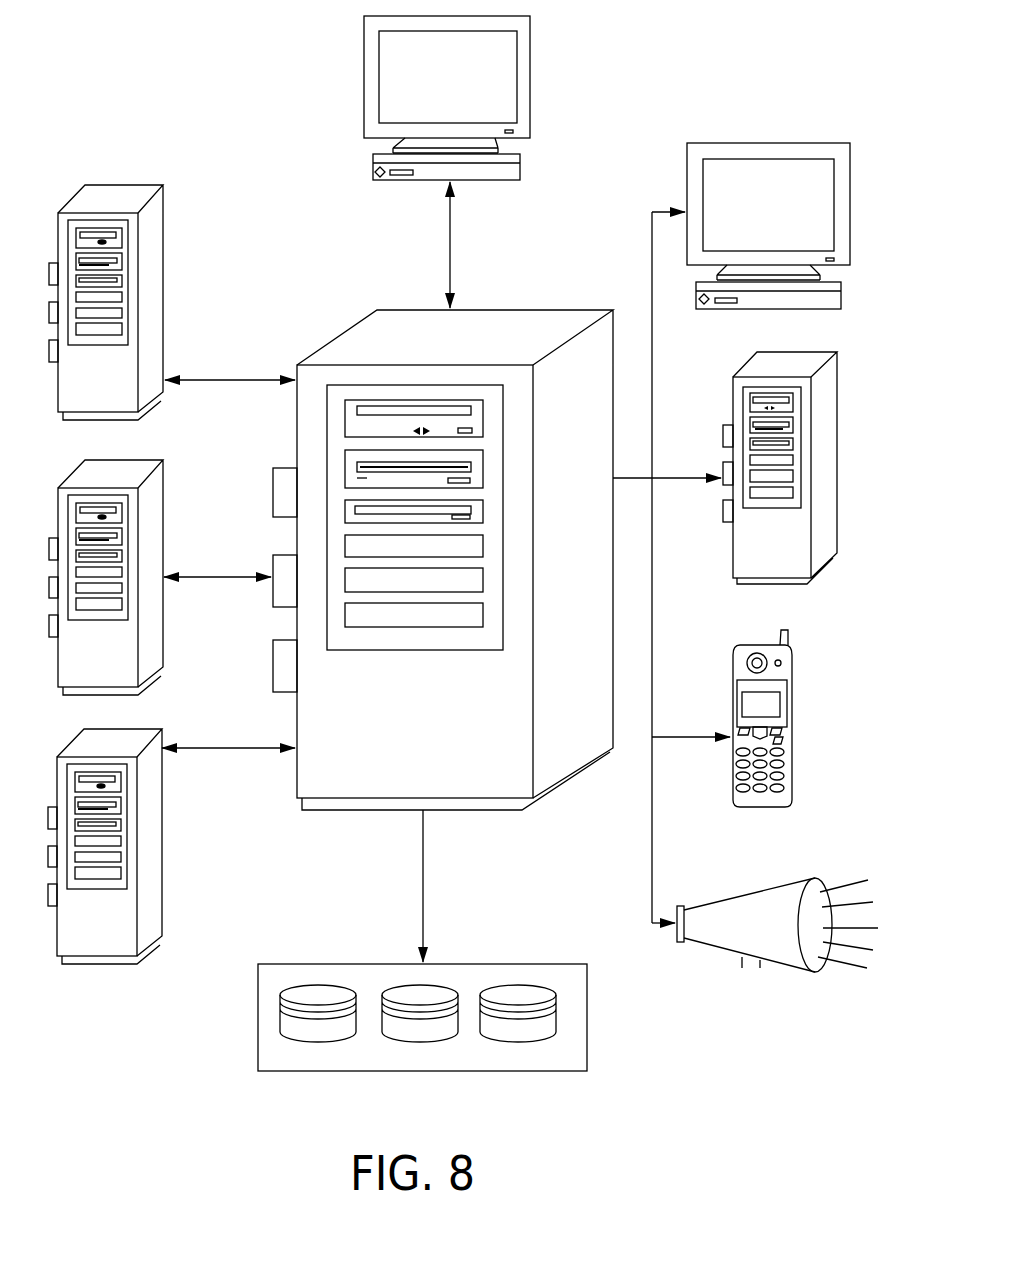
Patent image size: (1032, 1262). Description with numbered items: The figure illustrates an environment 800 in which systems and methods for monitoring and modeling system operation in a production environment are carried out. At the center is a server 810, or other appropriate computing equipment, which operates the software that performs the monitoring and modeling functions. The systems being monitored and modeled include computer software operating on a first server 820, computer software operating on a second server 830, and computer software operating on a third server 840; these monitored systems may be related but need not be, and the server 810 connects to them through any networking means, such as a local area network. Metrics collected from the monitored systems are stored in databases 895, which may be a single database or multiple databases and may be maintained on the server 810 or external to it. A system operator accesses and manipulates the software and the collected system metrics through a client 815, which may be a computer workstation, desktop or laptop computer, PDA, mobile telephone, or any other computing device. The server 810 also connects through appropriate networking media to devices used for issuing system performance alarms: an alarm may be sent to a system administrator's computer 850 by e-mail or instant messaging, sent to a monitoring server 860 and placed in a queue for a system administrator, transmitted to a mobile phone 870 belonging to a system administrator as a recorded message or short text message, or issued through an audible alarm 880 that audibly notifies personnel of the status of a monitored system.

The system 800 is at (195, 137).
The server 810 is at (538, 308).
The client 815 is at (530, 70).
The first server 820 is at (170, 258).
The second server 830 is at (170, 637).
The third server 840 is at (166, 827).
The system administrator's computer 850 is at (763, 143).
The monitoring server 860 is at (782, 584).
The mobile phone 870 is at (758, 808).
The audible alarm 880 is at (727, 950).
The databases 895 is at (422, 1071).